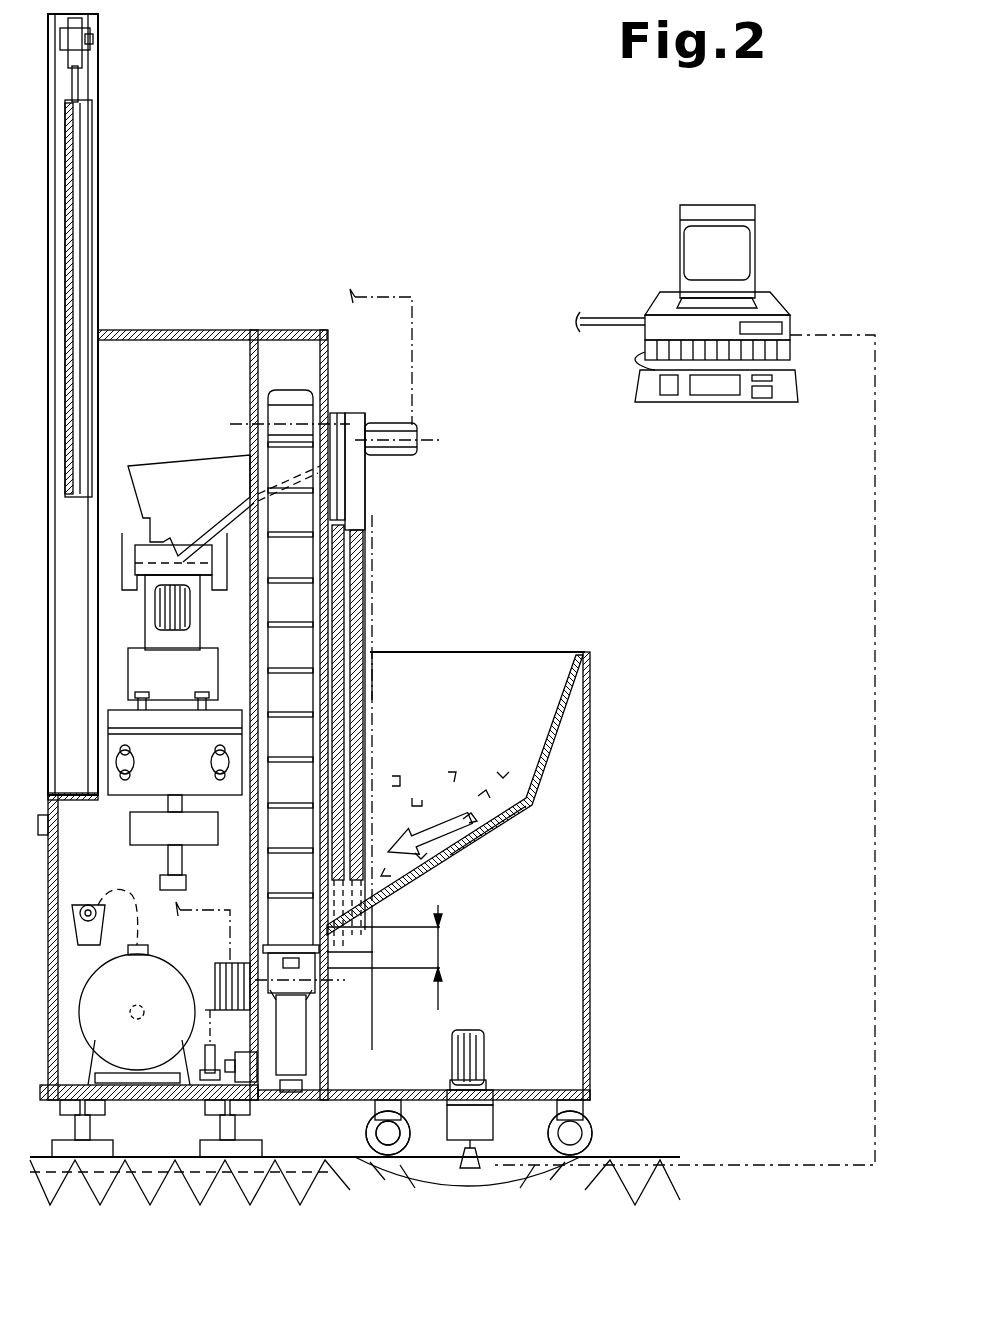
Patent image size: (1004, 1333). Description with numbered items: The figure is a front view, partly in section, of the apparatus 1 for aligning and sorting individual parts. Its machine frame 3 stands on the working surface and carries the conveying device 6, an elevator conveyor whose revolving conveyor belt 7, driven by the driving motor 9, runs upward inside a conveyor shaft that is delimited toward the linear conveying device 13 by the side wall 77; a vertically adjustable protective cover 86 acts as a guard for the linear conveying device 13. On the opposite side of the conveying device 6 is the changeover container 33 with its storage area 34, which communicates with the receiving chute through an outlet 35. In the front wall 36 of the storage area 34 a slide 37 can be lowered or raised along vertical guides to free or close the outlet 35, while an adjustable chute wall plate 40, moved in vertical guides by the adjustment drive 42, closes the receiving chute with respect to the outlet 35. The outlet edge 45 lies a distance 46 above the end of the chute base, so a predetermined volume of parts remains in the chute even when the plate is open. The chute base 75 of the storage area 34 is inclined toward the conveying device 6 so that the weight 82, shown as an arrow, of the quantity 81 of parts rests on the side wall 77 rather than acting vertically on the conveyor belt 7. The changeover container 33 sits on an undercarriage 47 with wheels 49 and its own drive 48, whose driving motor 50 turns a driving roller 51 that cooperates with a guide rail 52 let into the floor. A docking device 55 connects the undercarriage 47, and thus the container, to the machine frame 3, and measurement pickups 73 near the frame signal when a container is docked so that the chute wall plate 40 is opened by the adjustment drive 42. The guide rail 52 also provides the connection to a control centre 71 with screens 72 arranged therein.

The apparatus 1 is at (395, 186).
The machine frame 3 is at (123, 1102).
The conveying device 6 is at (292, 415).
The conveyor belt 7 is at (300, 410).
The driving motor 9 is at (240, 970).
The linear conveying device 13 is at (118, 525).
The changeover container 33 is at (606, 705).
The storage area 34 is at (548, 690).
The outlet 35 is at (388, 786).
The front wall 36 is at (352, 450).
The slide 37 is at (380, 620).
The chute wall plate 40 is at (342, 572).
The adjustment drive 42 is at (420, 432).
The outlet edge 45 is at (378, 907).
The distance 46 is at (442, 950).
The undercarriage 47 is at (598, 1130).
The drive 48 is at (437, 1128).
The wheels 49 is at (330, 1172).
The driving motor 50 is at (470, 1060).
The driving roller 51 is at (466, 1168).
The guide rail 52 is at (510, 1165).
The docking device 55 is at (252, 1092).
The control centre 71 is at (790, 290).
The screens 72 is at (722, 245).
The measurement pickups 73 is at (192, 1088).
The chute base 75 is at (472, 846).
The side wall 77 is at (250, 365).
The quantity of individual parts 81 is at (505, 746).
The weight 82 is at (436, 812).
The protective cover 86 is at (80, 235).